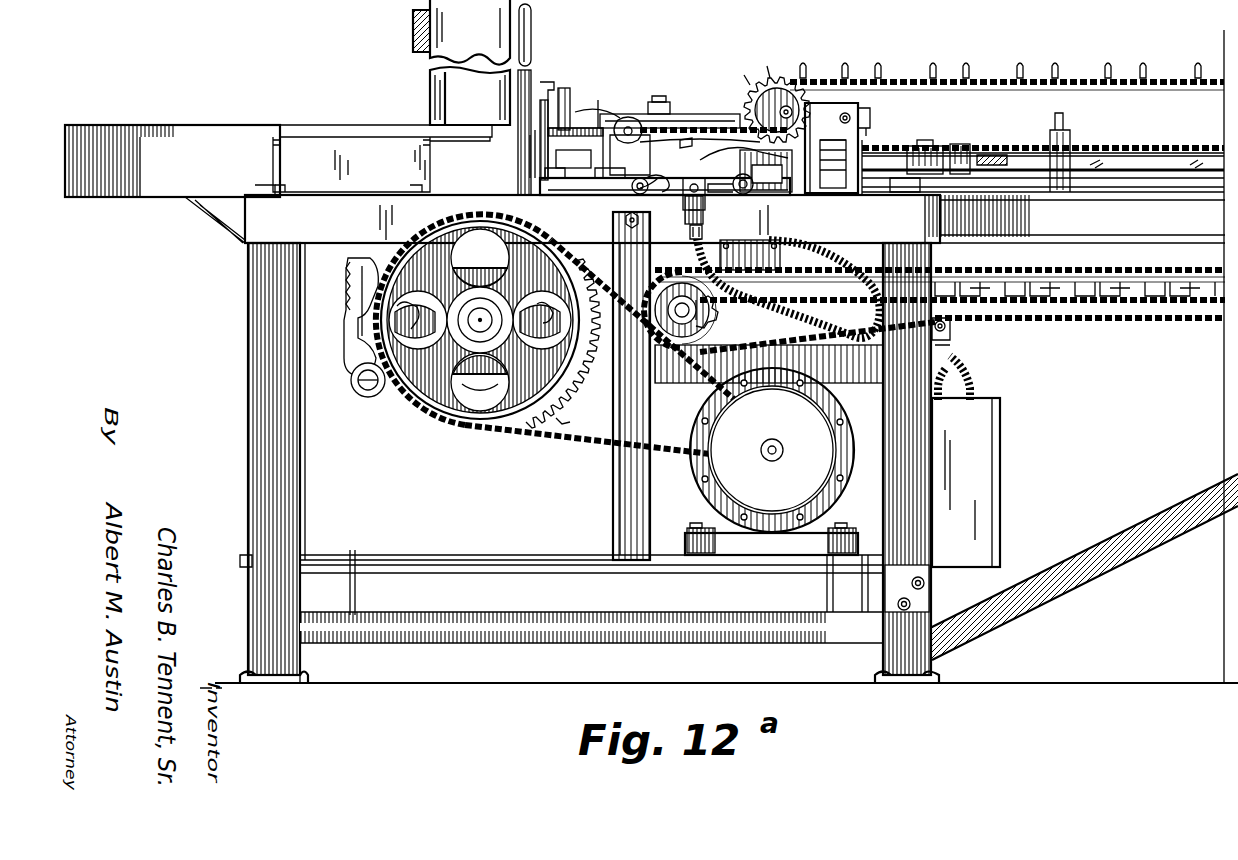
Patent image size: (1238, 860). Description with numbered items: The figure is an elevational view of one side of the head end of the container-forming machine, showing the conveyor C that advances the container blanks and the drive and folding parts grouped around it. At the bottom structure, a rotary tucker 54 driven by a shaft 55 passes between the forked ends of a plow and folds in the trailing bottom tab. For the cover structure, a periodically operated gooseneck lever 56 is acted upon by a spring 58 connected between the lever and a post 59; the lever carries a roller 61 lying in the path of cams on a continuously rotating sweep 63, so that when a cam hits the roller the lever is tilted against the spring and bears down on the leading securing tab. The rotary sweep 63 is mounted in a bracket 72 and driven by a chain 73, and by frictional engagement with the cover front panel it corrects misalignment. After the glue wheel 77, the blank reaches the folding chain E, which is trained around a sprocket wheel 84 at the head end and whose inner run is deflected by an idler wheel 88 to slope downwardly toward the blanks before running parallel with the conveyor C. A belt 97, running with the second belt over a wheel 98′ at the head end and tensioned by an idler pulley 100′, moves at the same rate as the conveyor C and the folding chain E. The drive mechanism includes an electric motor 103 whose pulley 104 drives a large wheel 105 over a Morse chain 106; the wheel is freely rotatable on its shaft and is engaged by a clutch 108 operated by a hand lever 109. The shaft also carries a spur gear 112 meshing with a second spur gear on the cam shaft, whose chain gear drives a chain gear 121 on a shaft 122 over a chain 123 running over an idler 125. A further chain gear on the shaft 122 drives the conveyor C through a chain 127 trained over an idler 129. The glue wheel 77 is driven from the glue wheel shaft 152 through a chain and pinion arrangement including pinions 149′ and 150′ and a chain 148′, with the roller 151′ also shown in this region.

The rotary tucker 54 is at (545, 150).
The shaft 55 is at (604, 100).
The gooseneck lever 56 is at (590, 102).
The spring 58 is at (563, 97).
The post 59 is at (544, 82).
The roller 61 is at (625, 118).
The rotary sweep 63 is at (655, 103).
The bracket 72 is at (678, 118).
The chain 73 is at (713, 128).
The glue wheel 77 is at (746, 170).
The sprocket wheel 84 is at (800, 80).
The idler wheel 88 is at (866, 122).
The belt 97 is at (1130, 165).
The wheel 98′ is at (948, 148).
The idler pulley 100′ is at (985, 150).
The electric motor 103 is at (735, 478).
The pulley 104 is at (772, 462).
The large wheel 105 is at (444, 425).
The Morse chain 106 is at (574, 470).
The clutch 108 is at (482, 393).
The hand lever 109 is at (536, 28).
The spur gear 112 is at (355, 262).
The chain gear 121 is at (720, 335).
The shaft 122 is at (560, 300).
The chain 123 is at (585, 325).
The idler 125 is at (555, 430).
The chain 127 is at (830, 340).
The idler 129 is at (950, 328).
The chain 148′ is at (735, 195).
The pinion 149′ is at (765, 196).
The pinion 150′ is at (697, 245).
The roller 151′ is at (750, 200).
The glue wheel shaft 152 is at (625, 200).
The folding chain E is at (985, 78).
The conveyor C is at (1080, 270).